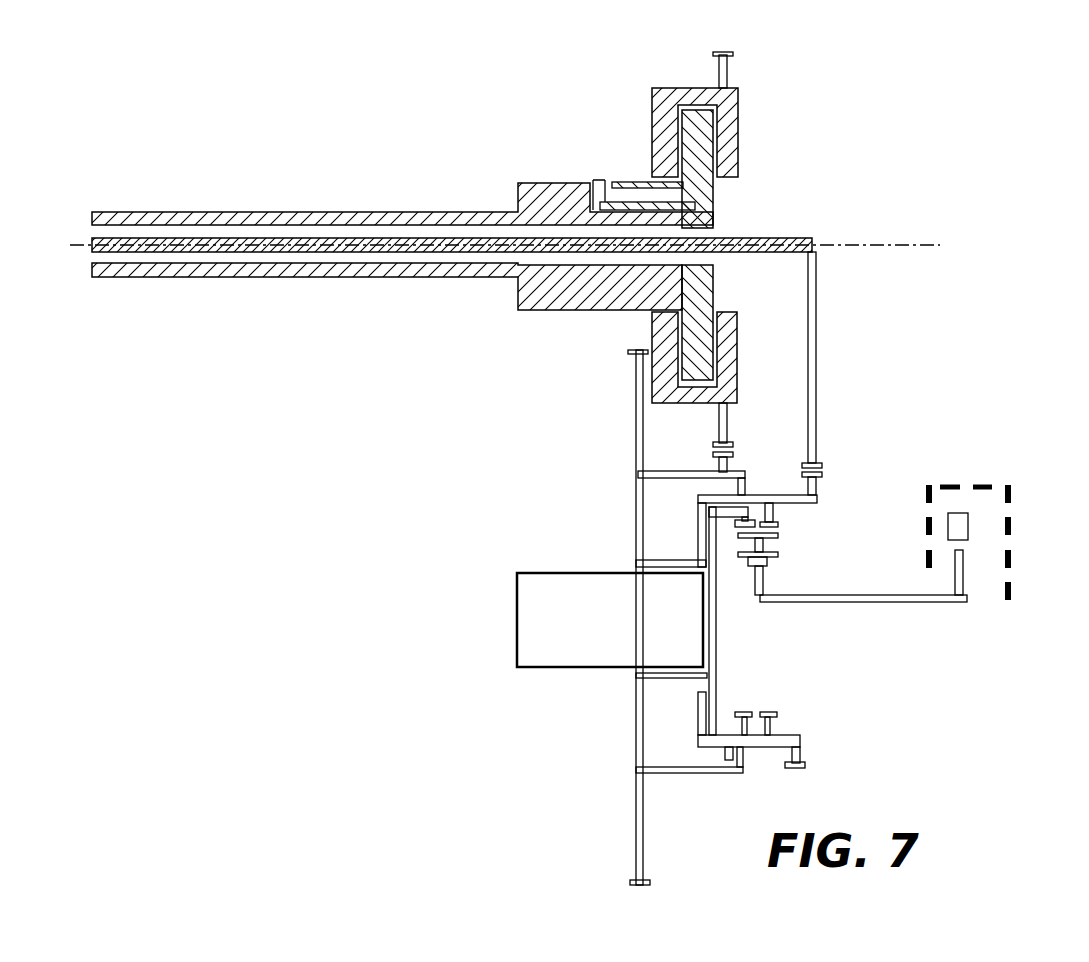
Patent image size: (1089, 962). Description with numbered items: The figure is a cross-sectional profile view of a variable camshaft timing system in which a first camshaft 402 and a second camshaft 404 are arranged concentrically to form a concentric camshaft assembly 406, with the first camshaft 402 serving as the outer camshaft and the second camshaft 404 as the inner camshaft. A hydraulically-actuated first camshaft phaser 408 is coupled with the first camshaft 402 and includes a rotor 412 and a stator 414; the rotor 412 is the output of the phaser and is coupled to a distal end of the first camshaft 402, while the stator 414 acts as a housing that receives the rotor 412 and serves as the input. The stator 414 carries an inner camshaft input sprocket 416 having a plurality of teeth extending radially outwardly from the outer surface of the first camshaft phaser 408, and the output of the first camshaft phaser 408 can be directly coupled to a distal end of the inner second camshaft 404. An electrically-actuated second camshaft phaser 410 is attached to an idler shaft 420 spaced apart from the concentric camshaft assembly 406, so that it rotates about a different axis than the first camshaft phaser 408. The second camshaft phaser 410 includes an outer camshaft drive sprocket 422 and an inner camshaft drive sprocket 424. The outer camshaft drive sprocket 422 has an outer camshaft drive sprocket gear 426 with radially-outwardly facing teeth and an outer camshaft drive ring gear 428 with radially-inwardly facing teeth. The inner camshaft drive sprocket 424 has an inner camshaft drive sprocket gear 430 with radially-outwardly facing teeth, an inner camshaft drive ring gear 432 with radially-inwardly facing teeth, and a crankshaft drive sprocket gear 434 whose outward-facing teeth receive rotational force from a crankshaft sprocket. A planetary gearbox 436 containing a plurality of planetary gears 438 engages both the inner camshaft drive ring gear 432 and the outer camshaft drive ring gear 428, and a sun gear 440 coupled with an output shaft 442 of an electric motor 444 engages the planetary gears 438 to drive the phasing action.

The first camshaft 402 is at (428, 211).
The second camshaft 404 is at (92, 245).
The concentric camshaft assembly 406 is at (418, 214).
The first camshaft phaser 408 is at (730, 213).
The second camshaft phaser 410 is at (798, 617).
The rotor 412 is at (717, 218).
The stator 414 is at (740, 121).
The inner camshaft input sprocket 416 is at (816, 344).
The idler shaft 420 is at (575, 668).
The outer camshaft drive sprocket 422 is at (692, 506).
The inner camshaft drive sprocket 424 is at (822, 492).
The outer camshaft drive sprocket gear 426 is at (730, 461).
The outer camshaft drive ring gear 428 is at (740, 521).
The inner camshaft drive sprocket gear 430 is at (822, 476).
The inner camshaft drive ring gear 432 is at (778, 527).
The crankshaft drive sprocket gear 434 is at (643, 850).
The planetary gearbox 436 is at (768, 564).
The planetary gears 438 is at (752, 540).
The sun gear 440 is at (767, 600).
The output shaft 442 is at (905, 603).
The electric motor 444 is at (1005, 522).